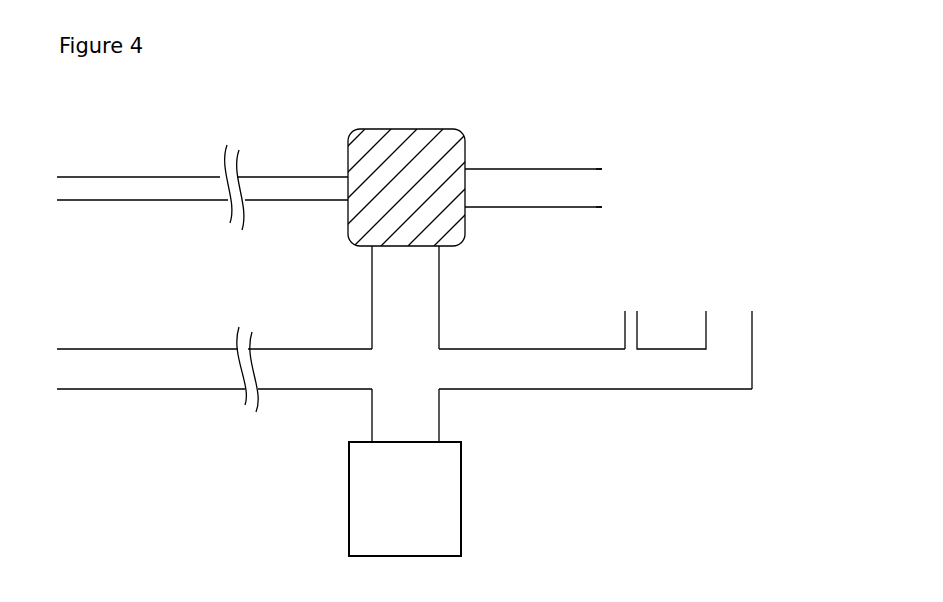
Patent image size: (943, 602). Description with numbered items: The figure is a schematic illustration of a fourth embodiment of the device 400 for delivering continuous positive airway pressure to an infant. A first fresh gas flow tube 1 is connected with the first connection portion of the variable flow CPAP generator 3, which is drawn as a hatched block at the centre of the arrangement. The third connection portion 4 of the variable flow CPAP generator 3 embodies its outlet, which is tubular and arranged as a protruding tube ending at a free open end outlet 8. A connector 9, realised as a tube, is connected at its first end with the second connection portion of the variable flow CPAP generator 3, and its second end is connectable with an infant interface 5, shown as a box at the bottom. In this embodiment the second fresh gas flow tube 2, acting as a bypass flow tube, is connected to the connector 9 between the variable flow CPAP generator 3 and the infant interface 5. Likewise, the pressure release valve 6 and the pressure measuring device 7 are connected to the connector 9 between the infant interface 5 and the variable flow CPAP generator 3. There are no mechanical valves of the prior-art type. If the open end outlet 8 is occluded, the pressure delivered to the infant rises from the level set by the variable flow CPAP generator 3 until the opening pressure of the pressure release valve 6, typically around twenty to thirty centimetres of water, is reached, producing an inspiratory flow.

The device 400 is at (308, 106).
The first fresh gas flow tube 1 is at (100, 188).
The second fresh gas flow tube 2 is at (103, 368).
The variable flow CPAP generator 3 is at (405, 138).
The third connection portion 4 is at (500, 190).
The infant interface 5 is at (440, 527).
The pressure release valve 6 is at (727, 312).
The pressure measuring device 7 is at (632, 312).
The open end outlet 8 is at (601, 182).
The connector 9 is at (417, 345).